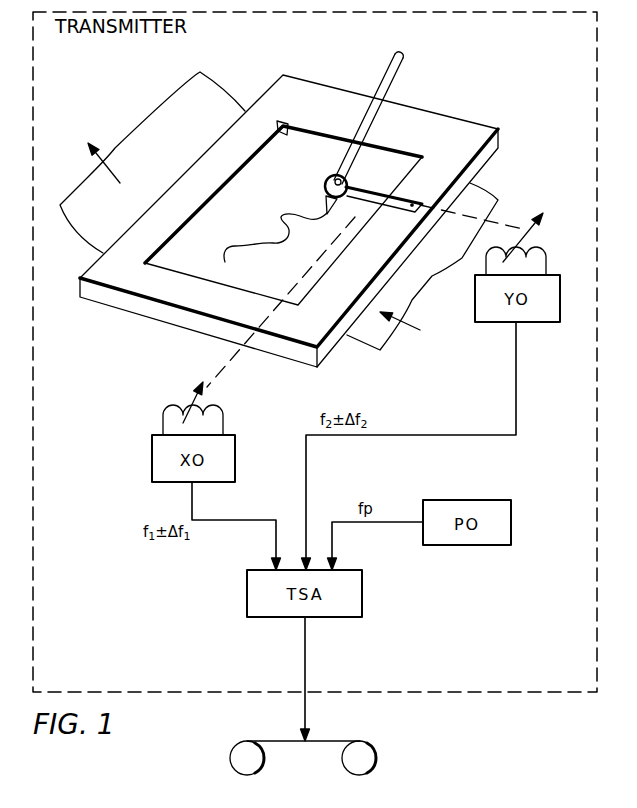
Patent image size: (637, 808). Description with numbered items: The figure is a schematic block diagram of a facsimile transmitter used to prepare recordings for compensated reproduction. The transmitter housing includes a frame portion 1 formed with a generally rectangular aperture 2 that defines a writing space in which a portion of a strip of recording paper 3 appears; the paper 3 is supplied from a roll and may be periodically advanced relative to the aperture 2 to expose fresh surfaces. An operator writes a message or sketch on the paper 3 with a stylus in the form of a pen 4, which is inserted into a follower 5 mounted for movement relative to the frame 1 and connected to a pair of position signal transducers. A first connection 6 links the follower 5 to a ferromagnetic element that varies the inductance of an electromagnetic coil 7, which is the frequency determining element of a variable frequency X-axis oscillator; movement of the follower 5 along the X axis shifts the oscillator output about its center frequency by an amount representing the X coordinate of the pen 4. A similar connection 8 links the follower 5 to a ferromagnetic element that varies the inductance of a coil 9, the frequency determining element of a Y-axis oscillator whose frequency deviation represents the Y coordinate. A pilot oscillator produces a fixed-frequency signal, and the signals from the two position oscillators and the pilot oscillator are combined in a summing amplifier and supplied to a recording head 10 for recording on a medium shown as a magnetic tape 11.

The frame portion 1 is at (452, 120).
The rectangular aperture 2 is at (286, 122).
The recording paper 3 is at (218, 97).
The pen 4 is at (396, 78).
The follower 5 is at (360, 188).
The first connection 6 is at (296, 291).
The electromagnetic coil 7 is at (225, 414).
The connection 8 is at (506, 223).
The coil 9 is at (548, 258).
The recording head 10 is at (312, 740).
The magnetic tape 11 is at (266, 730).